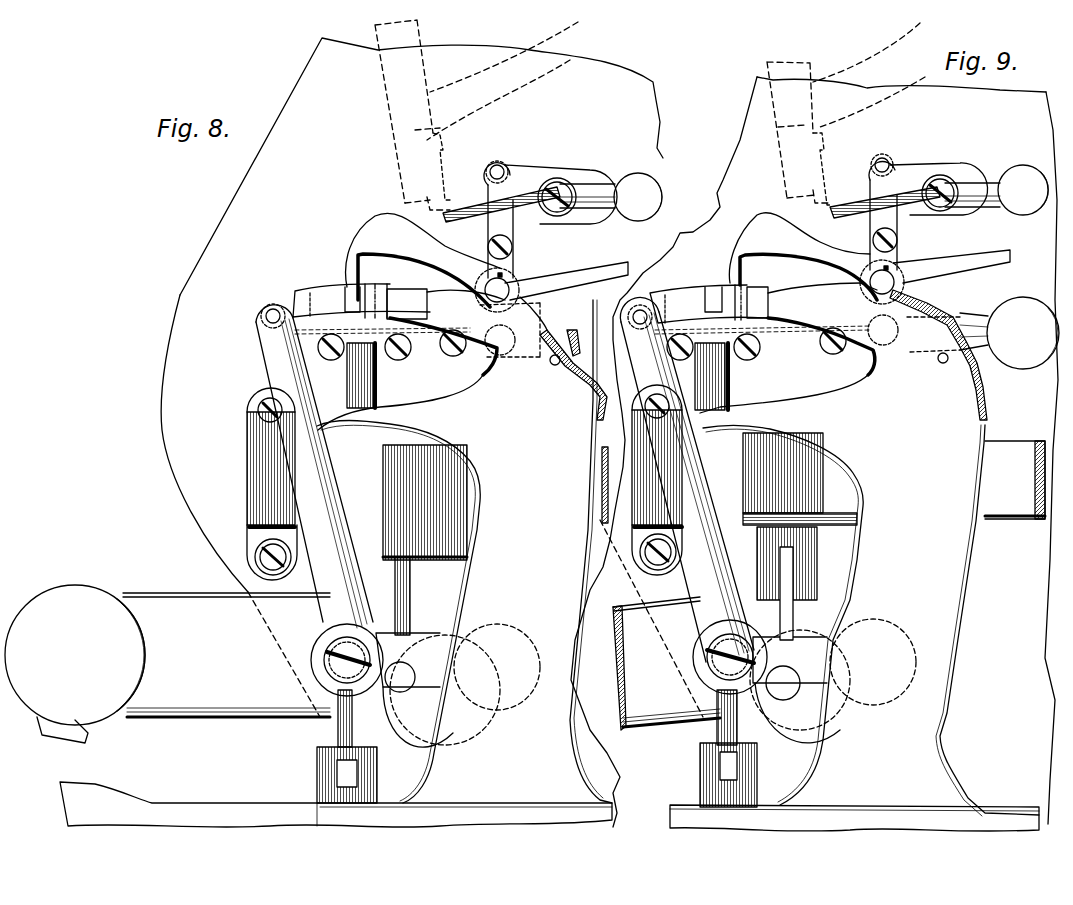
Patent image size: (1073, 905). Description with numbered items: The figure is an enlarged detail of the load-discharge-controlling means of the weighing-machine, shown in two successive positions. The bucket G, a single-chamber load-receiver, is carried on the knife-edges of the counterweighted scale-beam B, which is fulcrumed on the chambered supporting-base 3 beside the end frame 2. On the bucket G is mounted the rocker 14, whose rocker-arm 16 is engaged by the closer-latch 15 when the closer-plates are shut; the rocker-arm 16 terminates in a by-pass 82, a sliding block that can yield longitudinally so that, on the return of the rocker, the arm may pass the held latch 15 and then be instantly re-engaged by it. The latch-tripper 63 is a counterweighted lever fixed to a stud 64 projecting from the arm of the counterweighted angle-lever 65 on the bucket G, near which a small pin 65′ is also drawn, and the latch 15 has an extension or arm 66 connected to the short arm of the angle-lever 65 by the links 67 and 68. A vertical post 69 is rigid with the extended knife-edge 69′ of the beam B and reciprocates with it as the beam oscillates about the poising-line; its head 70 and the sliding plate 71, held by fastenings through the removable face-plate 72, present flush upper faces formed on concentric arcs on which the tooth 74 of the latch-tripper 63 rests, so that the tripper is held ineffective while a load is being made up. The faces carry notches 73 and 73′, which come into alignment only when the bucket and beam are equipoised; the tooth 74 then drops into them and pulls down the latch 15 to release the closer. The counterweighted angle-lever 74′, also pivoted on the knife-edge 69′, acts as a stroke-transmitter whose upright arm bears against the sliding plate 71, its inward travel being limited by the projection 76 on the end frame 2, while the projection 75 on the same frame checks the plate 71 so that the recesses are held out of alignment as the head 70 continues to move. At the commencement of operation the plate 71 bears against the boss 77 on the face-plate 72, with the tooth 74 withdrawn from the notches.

In FIG. 8, the end frame 2 is at (464, 551).
In FIG. 9, the end frame 2 is at (810, 615).
In FIG. 8, the chambered supporting-base 3 is at (388, 806).
In FIG. 9, the chambered supporting-base 3 is at (770, 806).
In FIG. 8, the rocker 14 is at (385, 78).
In FIG. 9, the rocker 14 is at (812, 70).
In FIG. 8, the closer-latch 15 is at (460, 212).
In FIG. 9, the closer-latch 15 is at (843, 207).
In FIG. 8, the rocker-arm 16 is at (397, 150).
In FIG. 9, the rocker-arm 16 is at (780, 143).
In FIG. 8, the latch-tripper 63 is at (422, 250).
In FIG. 9, the latch-tripper 63 is at (828, 250).
In FIG. 8, the stud 64 is at (497, 283).
In FIG. 9, the stud 64 is at (897, 280).
In FIG. 8, the counterweighted angle-lever 65 is at (574, 340).
In FIG. 9, the counterweighted angle-lever 65 is at (974, 355).
In FIG. 8, the pin on rod 65 65′ is at (556, 366).
In FIG. 9, the pin on rod 65 65′ is at (943, 364).
In FIG. 8, the extension or arm 66 is at (533, 178).
In FIG. 9, the extension or arm 66 is at (905, 172).
In FIG. 8, the link 67 is at (515, 225).
In FIG. 9, the link 67 is at (897, 222).
In FIG. 8, the link 68 is at (515, 253).
In FIG. 9, the link 68 is at (898, 247).
In FIG. 8, the vertical standard or post 69 is at (350, 380).
In FIG. 9, the vertical standard or post 69 is at (722, 388).
In FIG. 8, the extended pivot or knife-edge 69′ is at (322, 650).
In FIG. 9, the extended pivot or knife-edge 69′ is at (723, 667).
In FIG. 8, the transverse plate or head 70 is at (405, 300).
In FIG. 9, the transverse plate or head 70 is at (758, 292).
In FIG. 8, the sliding plate or block 71 is at (300, 297).
In FIG. 9, the sliding plate or block 71 is at (667, 299).
In FIG. 8, the removable face-plate 72 is at (410, 332).
In FIG. 9, the removable face-plate 72 is at (710, 335).
In FIG. 8, the notch or slot 73 is at (350, 303).
In FIG. 9, the notch or slot 73 is at (705, 305).
In FIG. 8, the notch or slot 73′ is at (378, 293).
In FIG. 9, the notch or slot 73′ is at (717, 290).
In FIG. 8, the tooth 74 is at (357, 275).
In FIG. 9, the tooth 74 is at (742, 276).
In FIG. 8, the counterweighted angle-lever 74′ is at (297, 417).
In FIG. 9, the counterweighted angle-lever 74′ is at (668, 497).
In FIG. 8, the projection 75 is at (470, 350).
In FIG. 9, the projection 75 is at (800, 305).
In FIG. 8, the projection 76 is at (429, 560).
In FIG. 9, the projection 76 is at (808, 552).
In FIG. 8, the boss 77 is at (440, 340).
In FIG. 9, the boss 77 is at (773, 324).
In FIG. 8, the by-pass 82 is at (443, 172).
In FIG. 9, the by-pass 82 is at (826, 170).
In FIG. 8, the scale-beam B is at (167, 664).
In FIG. 9, the scale-beam B is at (666, 663).
In FIG. 8, the bucket G is at (412, 377).
In FIG. 9, the bucket G is at (814, 452).